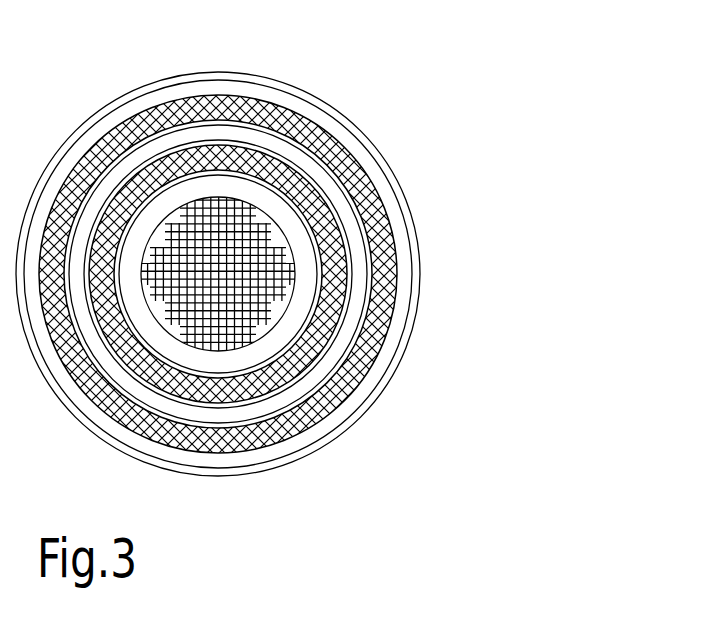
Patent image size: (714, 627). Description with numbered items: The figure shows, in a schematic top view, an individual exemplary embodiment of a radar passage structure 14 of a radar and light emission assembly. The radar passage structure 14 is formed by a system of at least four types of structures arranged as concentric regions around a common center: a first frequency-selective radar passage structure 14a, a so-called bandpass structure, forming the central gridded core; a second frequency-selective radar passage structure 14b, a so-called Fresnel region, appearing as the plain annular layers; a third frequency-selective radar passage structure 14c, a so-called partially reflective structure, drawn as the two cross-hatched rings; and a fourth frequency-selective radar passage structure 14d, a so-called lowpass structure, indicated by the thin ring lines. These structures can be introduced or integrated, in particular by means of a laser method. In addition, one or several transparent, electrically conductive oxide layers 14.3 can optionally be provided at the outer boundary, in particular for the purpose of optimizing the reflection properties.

The radar passage structure 14 is at (335, 269).
The transparent, electrically conductive oxide layer 14.3 is at (315, 433).
The first frequency-selective radar passage structure 14a is at (220, 275).
The second frequency-selective radar passage structure 14b is at (305, 107).
The third frequency-selective radar passage structure 14c is at (328, 340).
The fourth frequency-selective radar passage structure 14d is at (347, 300).